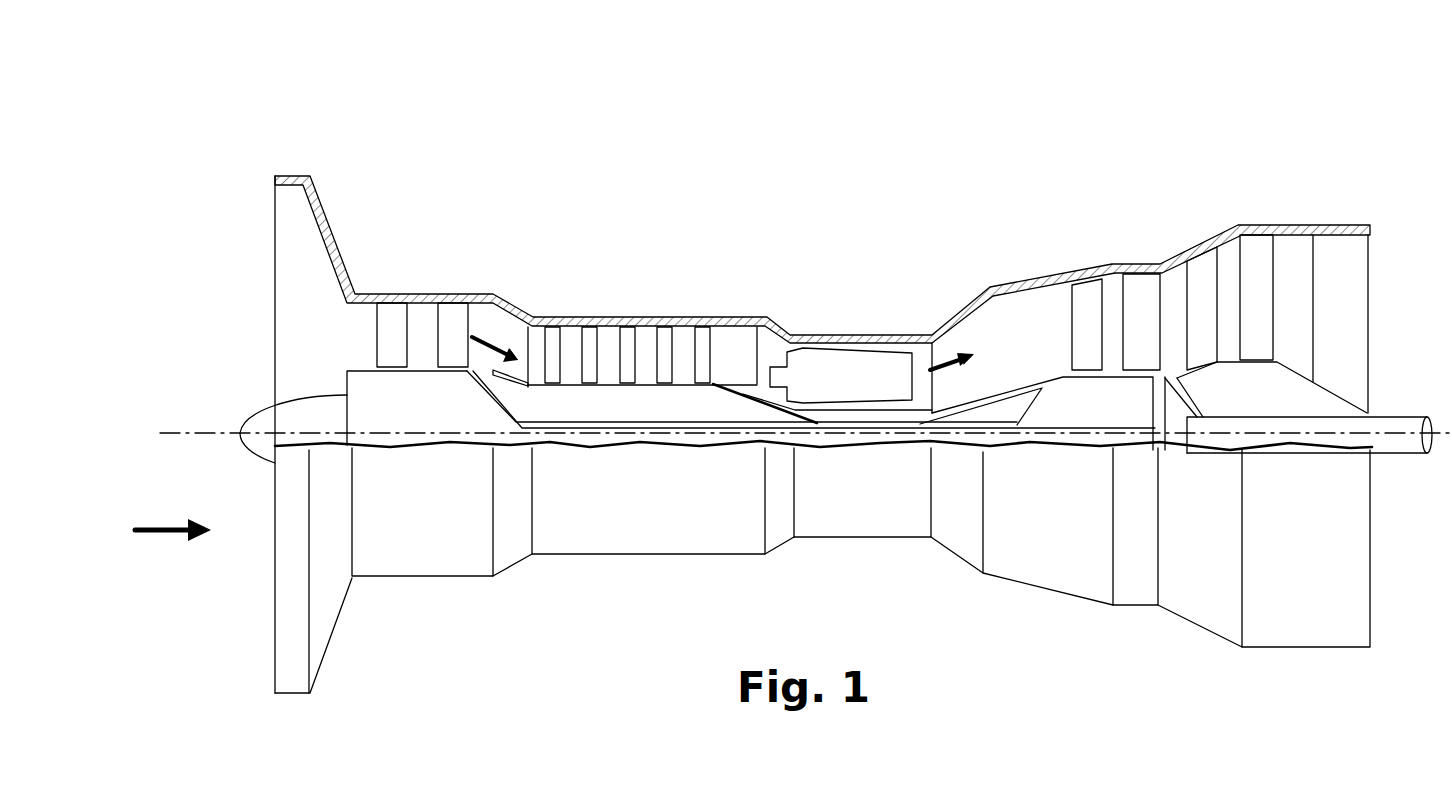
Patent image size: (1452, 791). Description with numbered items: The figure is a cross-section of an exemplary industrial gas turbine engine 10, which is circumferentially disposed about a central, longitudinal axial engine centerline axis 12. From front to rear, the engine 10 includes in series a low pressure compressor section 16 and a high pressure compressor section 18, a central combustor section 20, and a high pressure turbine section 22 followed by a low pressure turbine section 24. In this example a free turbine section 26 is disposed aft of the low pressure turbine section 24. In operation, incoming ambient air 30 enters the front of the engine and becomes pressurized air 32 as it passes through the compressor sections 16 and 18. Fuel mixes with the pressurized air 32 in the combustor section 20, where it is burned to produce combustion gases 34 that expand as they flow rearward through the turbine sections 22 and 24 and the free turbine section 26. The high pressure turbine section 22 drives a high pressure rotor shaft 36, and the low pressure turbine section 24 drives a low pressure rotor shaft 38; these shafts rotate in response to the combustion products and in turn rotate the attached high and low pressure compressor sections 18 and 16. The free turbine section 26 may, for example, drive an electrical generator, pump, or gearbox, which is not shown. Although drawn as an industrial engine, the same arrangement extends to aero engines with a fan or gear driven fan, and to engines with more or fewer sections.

The industrial gas turbine engine 10 is at (822, 392).
The axial engine centerline axis 12 is at (210, 430).
The low pressure compressor section 16 is at (415, 275).
The high pressure compressor section 18 is at (670, 283).
The combustor section 20 is at (833, 360).
The high pressure turbine section 22 is at (1035, 262).
The low pressure turbine section 24 is at (1148, 247).
The free turbine section 26 is at (1305, 220).
The incoming ambient air 30 is at (167, 522).
The pressurized air 32 is at (497, 333).
The combustion gases 34 is at (945, 353).
The high pressure rotor shaft 36 is at (853, 305).
The low pressure rotor shaft 38 is at (507, 413).